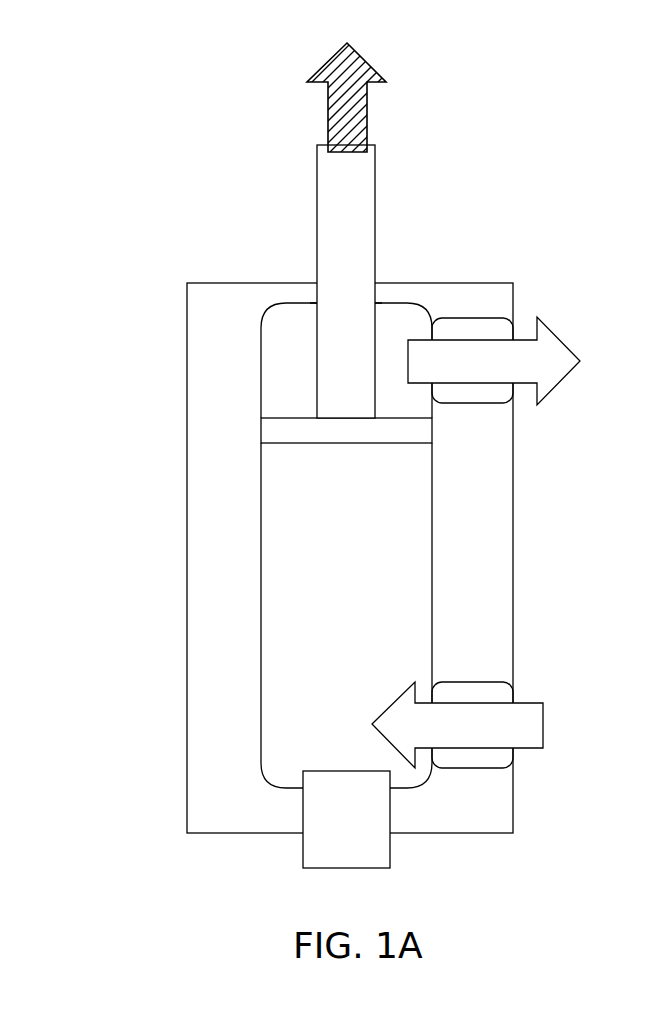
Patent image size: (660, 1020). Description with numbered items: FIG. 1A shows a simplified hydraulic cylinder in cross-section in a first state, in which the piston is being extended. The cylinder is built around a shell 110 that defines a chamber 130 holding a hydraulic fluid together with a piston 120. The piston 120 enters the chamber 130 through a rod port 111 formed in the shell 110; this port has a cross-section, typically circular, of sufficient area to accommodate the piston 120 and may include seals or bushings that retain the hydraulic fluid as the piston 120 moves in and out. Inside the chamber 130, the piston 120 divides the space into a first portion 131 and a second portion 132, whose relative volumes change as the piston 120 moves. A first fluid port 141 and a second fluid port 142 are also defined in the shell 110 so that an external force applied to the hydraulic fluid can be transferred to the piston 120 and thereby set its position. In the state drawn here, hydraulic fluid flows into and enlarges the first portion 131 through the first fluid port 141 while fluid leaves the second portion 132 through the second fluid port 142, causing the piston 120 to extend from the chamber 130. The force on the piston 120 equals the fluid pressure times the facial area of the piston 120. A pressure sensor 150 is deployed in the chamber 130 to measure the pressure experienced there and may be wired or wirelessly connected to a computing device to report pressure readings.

The shell 110 is at (203, 303).
The rod port 111 is at (317, 292).
The piston 120 is at (360, 187).
The chamber 130 is at (267, 545).
The first portion 131 is at (282, 708).
The second portion 132 is at (275, 372).
The first fluid port 141 is at (490, 760).
The second fluid port 142 is at (500, 392).
The pressure sensor 150 is at (380, 848).